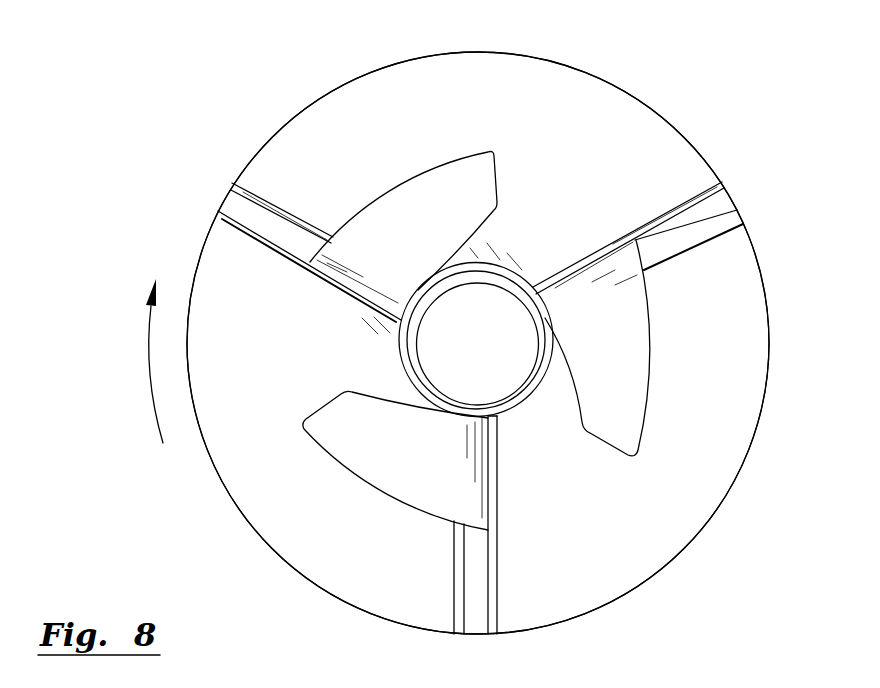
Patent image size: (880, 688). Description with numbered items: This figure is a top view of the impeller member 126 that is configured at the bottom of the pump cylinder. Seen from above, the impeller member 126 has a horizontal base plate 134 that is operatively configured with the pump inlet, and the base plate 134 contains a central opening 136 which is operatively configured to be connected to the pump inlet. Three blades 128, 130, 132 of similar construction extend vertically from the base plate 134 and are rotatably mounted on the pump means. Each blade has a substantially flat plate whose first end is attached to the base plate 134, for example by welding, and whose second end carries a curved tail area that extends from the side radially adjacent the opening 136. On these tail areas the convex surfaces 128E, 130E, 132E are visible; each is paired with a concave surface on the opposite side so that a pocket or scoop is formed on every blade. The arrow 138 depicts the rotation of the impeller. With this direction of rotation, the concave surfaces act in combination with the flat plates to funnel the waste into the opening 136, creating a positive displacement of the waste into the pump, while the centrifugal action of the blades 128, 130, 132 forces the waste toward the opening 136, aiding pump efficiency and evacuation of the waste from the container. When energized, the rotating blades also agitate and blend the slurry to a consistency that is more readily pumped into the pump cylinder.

The impeller member 126 is at (685, 91).
The blade 128 is at (218, 208).
The surface 128E is at (415, 195).
The blade 130 is at (475, 598).
The surface 130E is at (337, 437).
The blade 132 is at (703, 210).
The surface 132E is at (626, 395).
The horizontal base plate 134 is at (692, 493).
The opening 136 is at (500, 378).
The arrow 138 is at (148, 362).